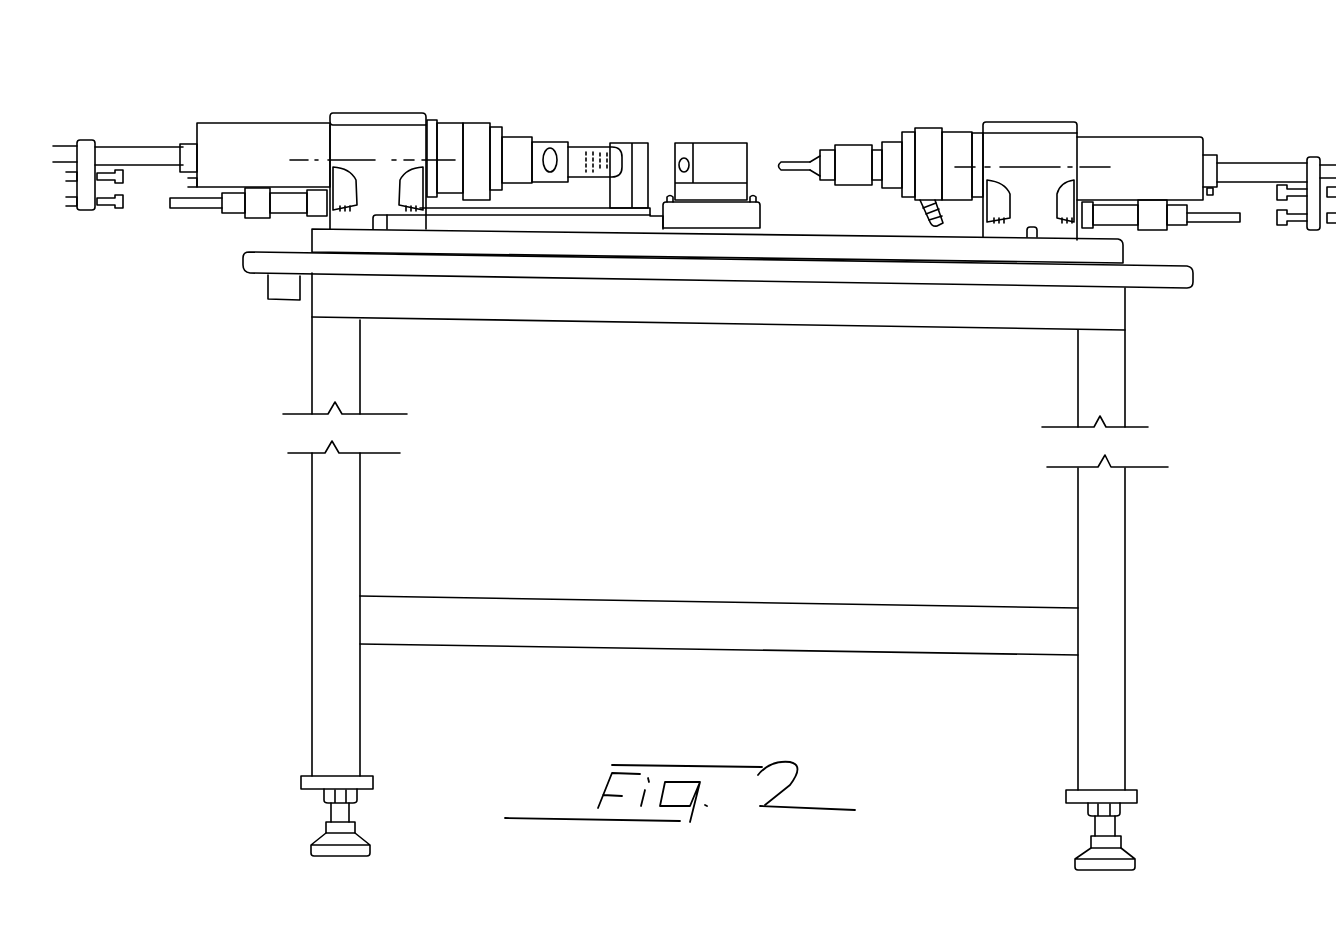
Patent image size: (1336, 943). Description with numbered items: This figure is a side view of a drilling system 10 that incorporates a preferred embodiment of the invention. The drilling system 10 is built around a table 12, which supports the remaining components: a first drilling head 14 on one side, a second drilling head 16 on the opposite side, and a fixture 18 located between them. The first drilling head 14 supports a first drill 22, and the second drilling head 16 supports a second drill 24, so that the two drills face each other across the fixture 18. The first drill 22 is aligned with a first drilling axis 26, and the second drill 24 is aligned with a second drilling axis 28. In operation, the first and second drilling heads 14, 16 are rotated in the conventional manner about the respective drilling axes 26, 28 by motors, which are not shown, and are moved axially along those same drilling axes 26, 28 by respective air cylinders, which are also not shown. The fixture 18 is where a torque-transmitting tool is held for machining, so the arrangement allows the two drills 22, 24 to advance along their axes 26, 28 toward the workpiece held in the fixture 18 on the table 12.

The drilling system 10 is at (685, 83).
The table 12 is at (748, 316).
The first drilling head 14 is at (518, 138).
The second drilling head 16 is at (853, 145).
The fixture 18 is at (718, 160).
The first drill 22 is at (598, 140).
The second drill 24 is at (793, 165).
The first drilling axis 26 is at (362, 162).
The second drilling axis 28 is at (1033, 165).